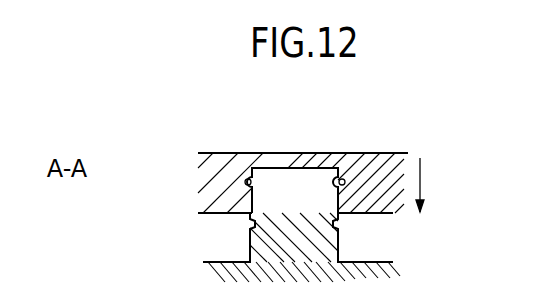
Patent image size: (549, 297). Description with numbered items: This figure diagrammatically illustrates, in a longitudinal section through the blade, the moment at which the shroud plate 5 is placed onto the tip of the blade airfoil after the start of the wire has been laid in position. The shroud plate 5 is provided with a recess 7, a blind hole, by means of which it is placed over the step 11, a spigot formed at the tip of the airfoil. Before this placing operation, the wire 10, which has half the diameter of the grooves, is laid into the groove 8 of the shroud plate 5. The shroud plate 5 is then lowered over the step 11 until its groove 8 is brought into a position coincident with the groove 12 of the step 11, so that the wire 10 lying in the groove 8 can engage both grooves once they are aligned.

The shroud plate 5 is at (385, 160).
The recess 7 is at (338, 207).
The groove 8 is at (245, 183).
The wire 10 is at (339, 180).
The step 11 is at (315, 240).
The groove 12 is at (336, 222).